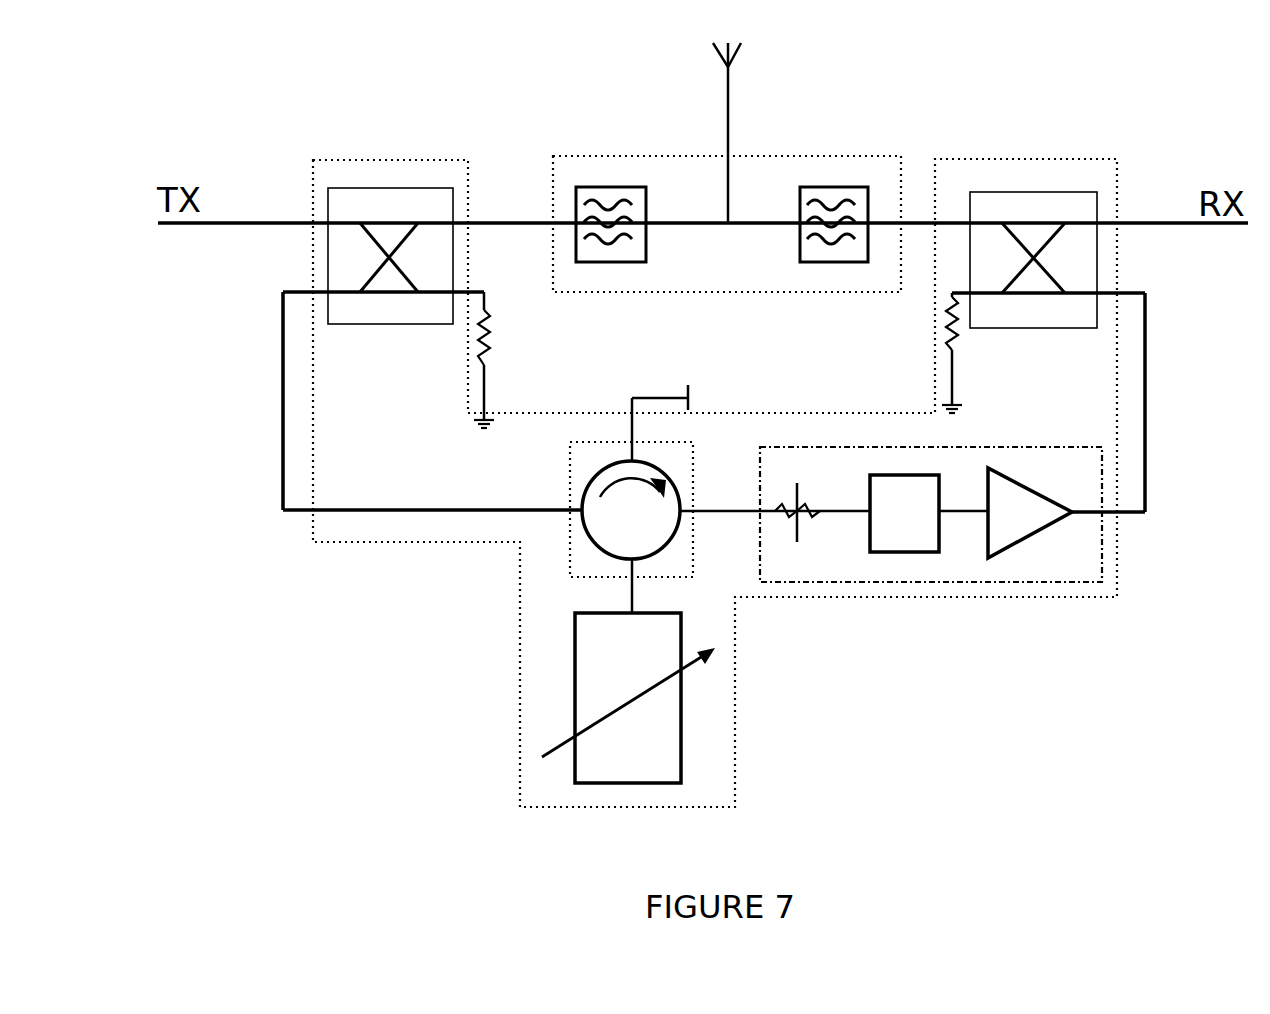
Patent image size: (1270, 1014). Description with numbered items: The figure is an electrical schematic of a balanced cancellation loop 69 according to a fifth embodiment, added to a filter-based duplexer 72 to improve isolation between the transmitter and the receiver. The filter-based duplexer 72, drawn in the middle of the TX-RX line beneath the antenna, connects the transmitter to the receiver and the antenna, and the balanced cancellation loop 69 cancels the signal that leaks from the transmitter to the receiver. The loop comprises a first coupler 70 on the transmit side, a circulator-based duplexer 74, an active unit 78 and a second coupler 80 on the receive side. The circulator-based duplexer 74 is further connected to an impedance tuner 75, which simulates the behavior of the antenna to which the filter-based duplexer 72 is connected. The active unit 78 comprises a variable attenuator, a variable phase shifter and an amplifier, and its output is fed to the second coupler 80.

The balanced cancellation loop 69 is at (737, 698).
The first coupler 70 is at (392, 188).
The filter-based duplexer 72 is at (903, 157).
The circulator-based duplexer 74 is at (572, 577).
The impedance tuner 75 is at (682, 698).
The active unit 78 is at (932, 582).
The second coupler 80 is at (1034, 188).